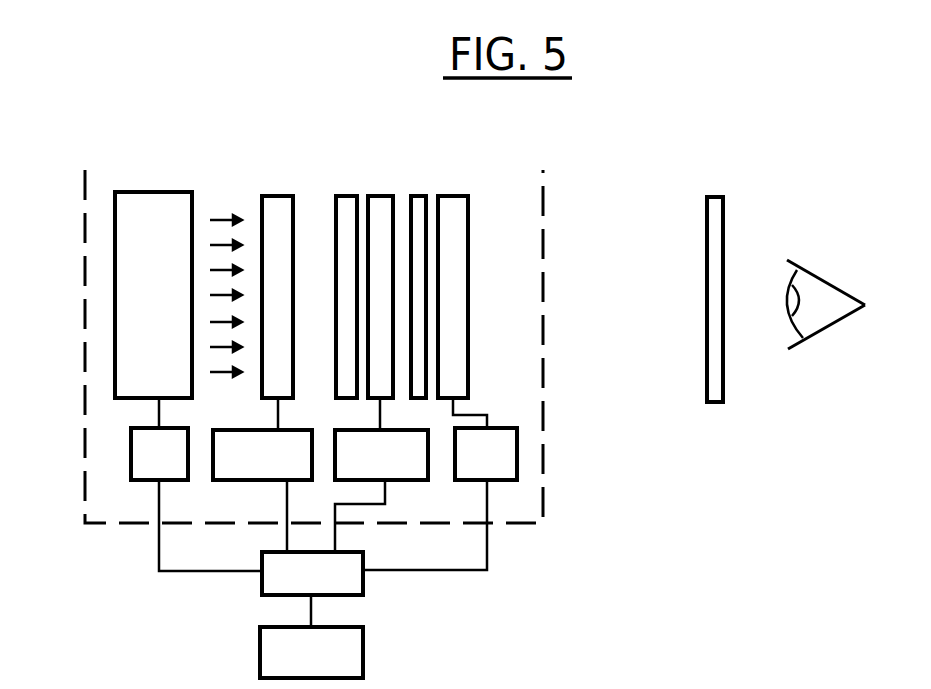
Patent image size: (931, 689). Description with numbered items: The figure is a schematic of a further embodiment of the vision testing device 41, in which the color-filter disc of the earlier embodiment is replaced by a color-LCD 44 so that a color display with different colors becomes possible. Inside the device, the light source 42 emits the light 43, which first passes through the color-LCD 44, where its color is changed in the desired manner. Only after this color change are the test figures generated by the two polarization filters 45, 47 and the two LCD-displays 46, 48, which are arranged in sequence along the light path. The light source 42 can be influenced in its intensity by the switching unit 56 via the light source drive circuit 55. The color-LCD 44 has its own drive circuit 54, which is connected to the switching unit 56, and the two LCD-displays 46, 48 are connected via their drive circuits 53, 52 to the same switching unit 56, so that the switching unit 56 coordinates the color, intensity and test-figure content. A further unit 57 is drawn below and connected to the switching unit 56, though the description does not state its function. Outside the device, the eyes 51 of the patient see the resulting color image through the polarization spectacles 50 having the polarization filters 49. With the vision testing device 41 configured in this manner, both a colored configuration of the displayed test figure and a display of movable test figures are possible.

The vision testing device 41 is at (84, 205).
The light source 42 is at (152, 205).
The light 43 is at (223, 216).
The color-LCD 44 is at (278, 208).
The polarization filter 45 is at (345, 202).
The LCD-display 46 is at (382, 208).
The polarization filter 47 is at (418, 200).
The LCD-display 48 is at (453, 208).
The polarization filters 49 is at (712, 197).
The polarization spectacles 50 is at (693, 201).
The eyes 51 is at (817, 277).
The drive circuit 52 is at (503, 463).
The drive circuit 53 is at (396, 463).
The drive circuit 54 is at (276, 463).
The light source drive circuit 55 is at (173, 463).
The switching unit 56 is at (326, 583).
The input unit 57 is at (325, 662).